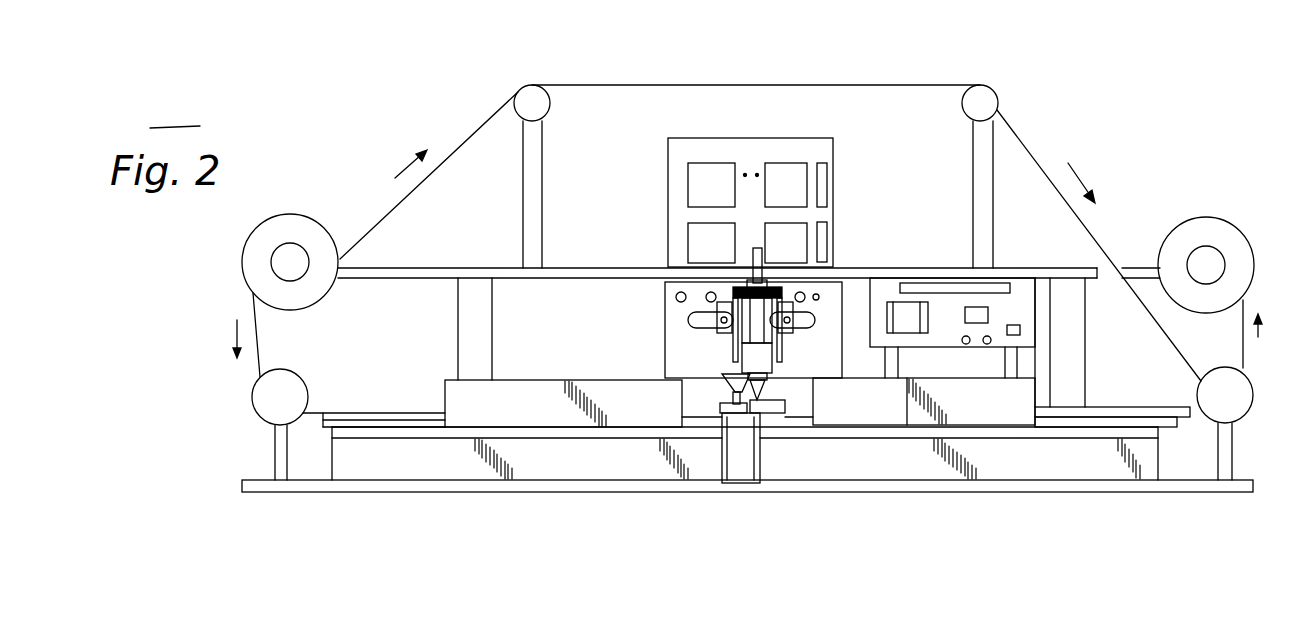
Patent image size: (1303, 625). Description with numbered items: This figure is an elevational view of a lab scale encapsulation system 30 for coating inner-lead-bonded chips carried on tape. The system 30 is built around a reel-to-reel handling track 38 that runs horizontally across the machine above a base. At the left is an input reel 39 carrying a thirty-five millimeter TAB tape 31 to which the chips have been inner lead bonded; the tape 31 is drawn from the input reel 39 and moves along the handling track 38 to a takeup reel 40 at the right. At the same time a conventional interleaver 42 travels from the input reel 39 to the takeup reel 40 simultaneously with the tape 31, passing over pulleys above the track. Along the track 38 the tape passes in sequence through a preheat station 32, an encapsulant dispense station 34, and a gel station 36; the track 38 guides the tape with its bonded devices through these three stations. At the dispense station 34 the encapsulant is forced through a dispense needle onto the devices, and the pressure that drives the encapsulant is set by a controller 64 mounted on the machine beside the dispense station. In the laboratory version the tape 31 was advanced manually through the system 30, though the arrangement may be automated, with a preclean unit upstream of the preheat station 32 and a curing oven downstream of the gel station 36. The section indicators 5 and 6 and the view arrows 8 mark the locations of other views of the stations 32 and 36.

The lab scale system 30 is at (1022, 102).
The TAB tape 31 is at (252, 308).
The preheat station 32 is at (518, 412).
The encapsulant dispense station 34 is at (772, 378).
The gel station 36 is at (990, 411).
The reel-to-reel handling track 38 is at (363, 413).
The input reel 39 is at (308, 214).
The takeup reel 40 is at (1227, 218).
The interleaver 42 is at (481, 123).
The controller 64 is at (883, 283).
The section line 5 is at (445, 317).
The section line 6 is at (565, 320).
The view arrow 8 is at (629, 379).